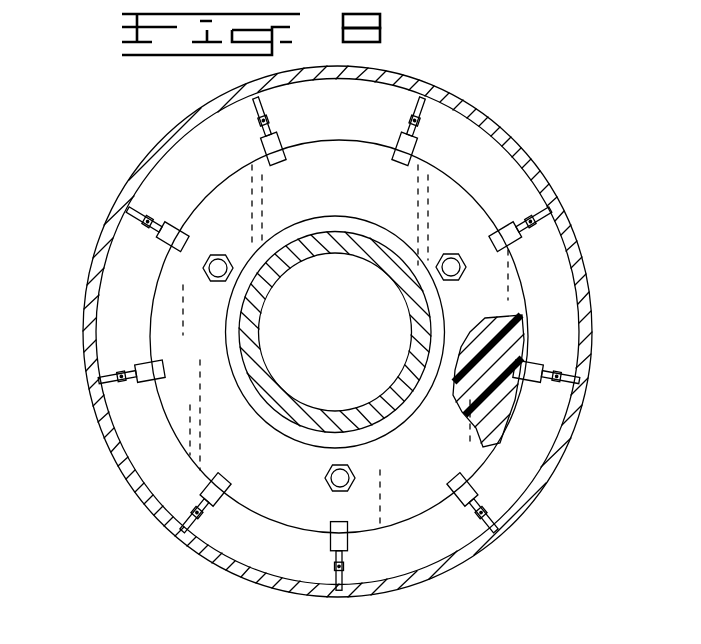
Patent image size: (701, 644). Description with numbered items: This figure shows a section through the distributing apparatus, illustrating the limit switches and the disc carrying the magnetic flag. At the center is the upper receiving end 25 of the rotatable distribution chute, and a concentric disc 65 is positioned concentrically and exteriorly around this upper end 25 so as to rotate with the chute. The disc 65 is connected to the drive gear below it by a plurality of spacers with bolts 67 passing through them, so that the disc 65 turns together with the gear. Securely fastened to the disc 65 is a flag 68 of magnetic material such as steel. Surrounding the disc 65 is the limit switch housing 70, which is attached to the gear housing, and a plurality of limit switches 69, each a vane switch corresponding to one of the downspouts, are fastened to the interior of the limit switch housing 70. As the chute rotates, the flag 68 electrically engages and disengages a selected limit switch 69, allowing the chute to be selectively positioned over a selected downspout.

The upper receiving end 25 is at (418, 308).
The concentric disc 65 is at (277, 502).
The bolts 67 is at (455, 252).
The flag 68 is at (510, 382).
The limit switch 69 is at (262, 150).
The limit switch housing 70 is at (123, 472).